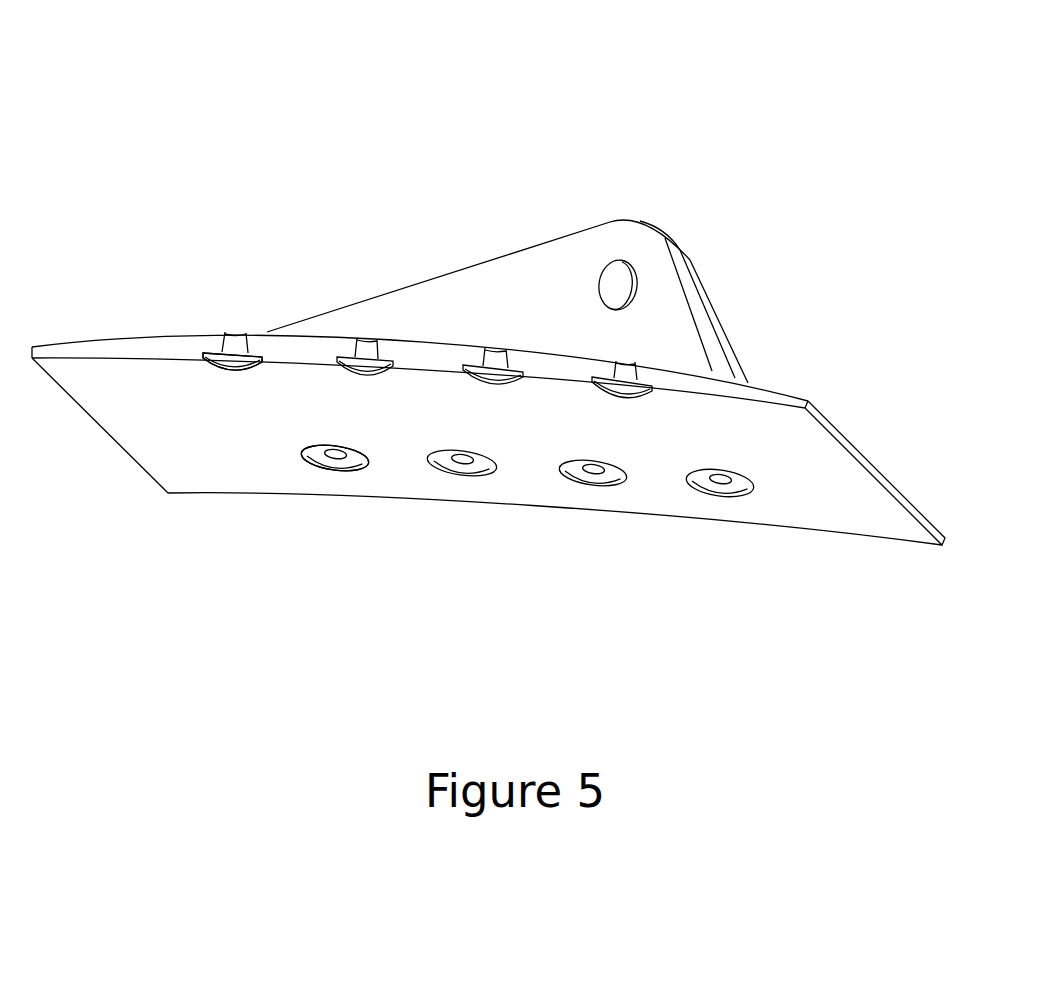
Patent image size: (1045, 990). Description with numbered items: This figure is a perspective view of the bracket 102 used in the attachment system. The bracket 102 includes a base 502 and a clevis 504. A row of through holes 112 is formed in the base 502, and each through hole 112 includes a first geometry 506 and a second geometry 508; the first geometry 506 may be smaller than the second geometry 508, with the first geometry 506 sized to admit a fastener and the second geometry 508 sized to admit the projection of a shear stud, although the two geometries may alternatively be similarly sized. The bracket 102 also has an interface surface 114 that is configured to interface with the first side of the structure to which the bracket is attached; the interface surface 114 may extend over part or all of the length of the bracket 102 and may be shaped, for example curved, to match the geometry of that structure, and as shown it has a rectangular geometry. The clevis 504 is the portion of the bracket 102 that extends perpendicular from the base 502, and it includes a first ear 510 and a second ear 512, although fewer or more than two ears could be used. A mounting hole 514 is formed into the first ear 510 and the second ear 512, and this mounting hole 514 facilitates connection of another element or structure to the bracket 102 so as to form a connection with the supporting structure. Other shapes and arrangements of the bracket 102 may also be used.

The bracket 102 is at (210, 69).
The through holes 112 is at (217, 369).
The interface surface 114 is at (822, 505).
The base 502 is at (839, 431).
The clevis 504 is at (433, 278).
The first geometry 506 is at (255, 333).
The second geometry 508 is at (214, 350).
The first ear 510 is at (636, 219).
The second ear 512 is at (722, 310).
The mounting hole 514 is at (596, 282).